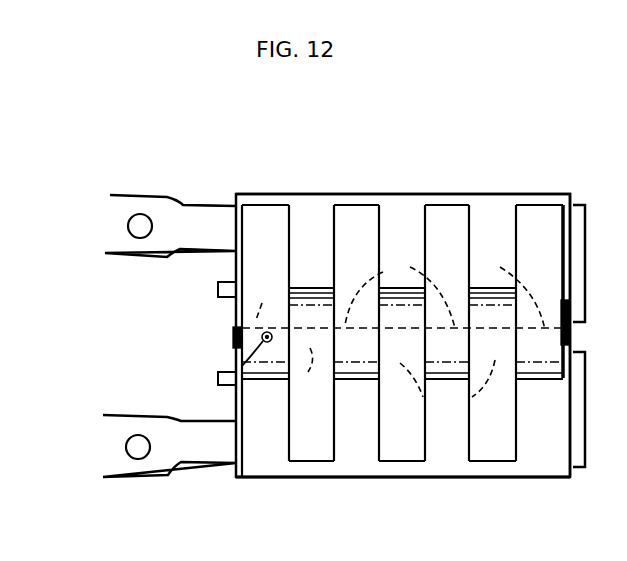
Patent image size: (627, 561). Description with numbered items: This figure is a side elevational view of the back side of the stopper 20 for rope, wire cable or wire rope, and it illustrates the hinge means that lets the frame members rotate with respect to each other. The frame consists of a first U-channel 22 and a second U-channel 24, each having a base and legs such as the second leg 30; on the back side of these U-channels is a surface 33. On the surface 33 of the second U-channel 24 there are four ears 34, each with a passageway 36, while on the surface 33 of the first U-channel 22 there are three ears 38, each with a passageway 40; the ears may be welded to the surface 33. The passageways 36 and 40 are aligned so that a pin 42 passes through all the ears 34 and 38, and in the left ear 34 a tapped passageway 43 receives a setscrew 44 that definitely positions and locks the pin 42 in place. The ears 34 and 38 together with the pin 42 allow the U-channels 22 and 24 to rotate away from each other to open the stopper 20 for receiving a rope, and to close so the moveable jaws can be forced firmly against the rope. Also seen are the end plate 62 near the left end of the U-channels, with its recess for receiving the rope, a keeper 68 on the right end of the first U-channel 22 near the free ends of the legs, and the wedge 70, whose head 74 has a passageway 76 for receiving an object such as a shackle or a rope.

The stopper 20 is at (274, 147).
The first U-channel 22 is at (456, 483).
The second U-channel 24 is at (537, 165).
The second leg 30 is at (393, 204).
The back surface 33 is at (307, 208).
The ears 34 is at (282, 244).
The passageway 36 is at (397, 284).
The ears 38 is at (329, 451).
The passageway 40 is at (394, 389).
The pin 42 is at (233, 336).
The tapped passageway 43 is at (240, 356).
The setscrew 44 is at (262, 335).
The end plate 62 is at (580, 205).
The keeper 68 is at (218, 290).
The wedge 70 is at (229, 242).
The head 74 is at (127, 203).
The passageway 76 is at (132, 222).